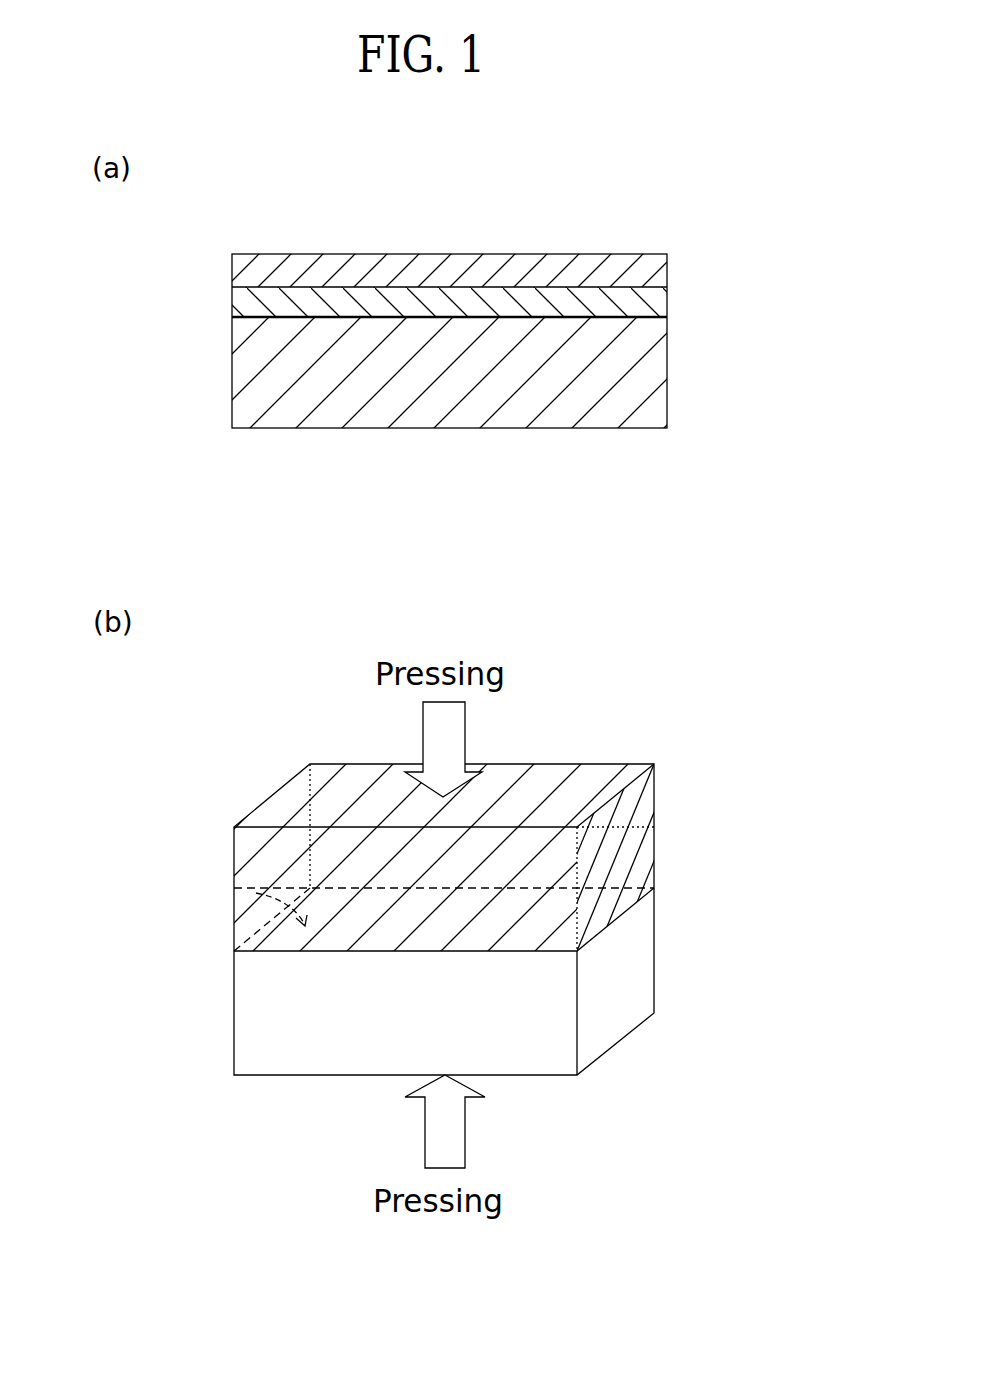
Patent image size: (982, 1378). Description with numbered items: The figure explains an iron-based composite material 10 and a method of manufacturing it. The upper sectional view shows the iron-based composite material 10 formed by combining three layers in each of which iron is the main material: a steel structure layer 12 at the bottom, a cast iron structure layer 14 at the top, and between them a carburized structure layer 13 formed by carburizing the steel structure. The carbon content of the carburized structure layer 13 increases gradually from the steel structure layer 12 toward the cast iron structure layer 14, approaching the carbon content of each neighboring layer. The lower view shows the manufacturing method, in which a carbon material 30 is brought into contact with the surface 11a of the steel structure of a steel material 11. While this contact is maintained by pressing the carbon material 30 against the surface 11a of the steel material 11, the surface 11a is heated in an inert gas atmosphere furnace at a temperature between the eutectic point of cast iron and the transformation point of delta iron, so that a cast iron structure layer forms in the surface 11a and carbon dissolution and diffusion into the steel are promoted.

The iron-based composite material 10 is at (775, 237).
The steel structure layer 12 is at (657, 372).
The carburized structure layer 13 is at (657, 300).
The cast iron structure layer 14 is at (657, 273).
The carbon material 30 is at (653, 830).
The steel material 11 is at (647, 958).
The surface 11a is at (234, 891).